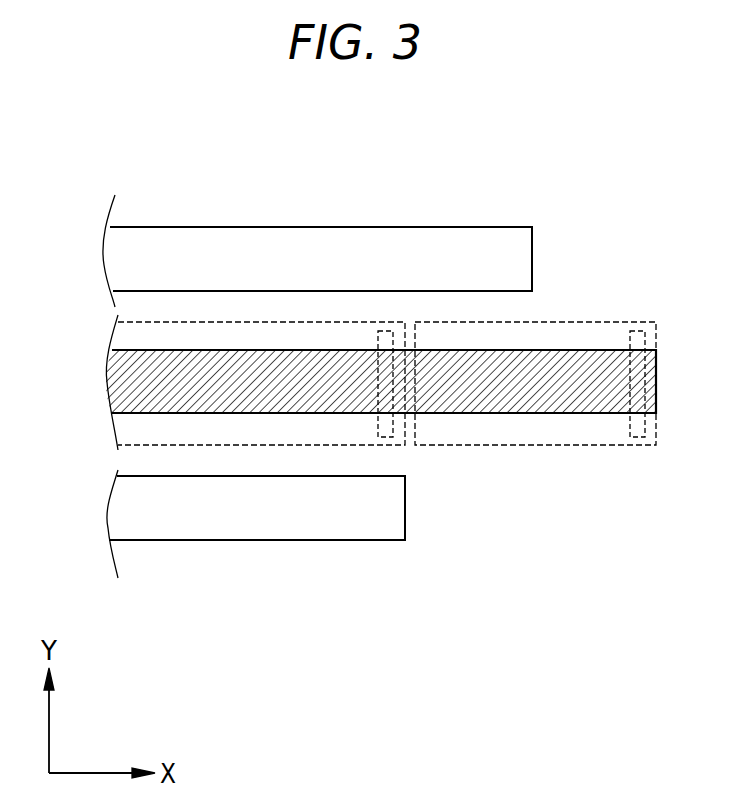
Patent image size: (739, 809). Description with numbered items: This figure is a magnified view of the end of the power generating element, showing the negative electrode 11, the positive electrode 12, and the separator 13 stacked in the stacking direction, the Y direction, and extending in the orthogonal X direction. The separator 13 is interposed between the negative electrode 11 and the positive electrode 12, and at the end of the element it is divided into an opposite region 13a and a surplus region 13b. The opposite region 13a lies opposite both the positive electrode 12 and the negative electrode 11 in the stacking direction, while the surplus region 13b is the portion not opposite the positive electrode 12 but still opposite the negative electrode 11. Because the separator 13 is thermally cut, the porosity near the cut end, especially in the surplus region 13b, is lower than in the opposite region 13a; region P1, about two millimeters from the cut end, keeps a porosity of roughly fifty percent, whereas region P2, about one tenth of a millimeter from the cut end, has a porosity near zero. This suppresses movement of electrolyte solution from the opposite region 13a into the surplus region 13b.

The negative electrode 11 is at (314, 252).
The positive electrode 12 is at (243, 520).
The separator 13 is at (110, 383).
The opposite region 13a is at (387, 325).
The surplus region 13b is at (538, 447).
The region P1 is at (385, 437).
The region P2 is at (640, 437).